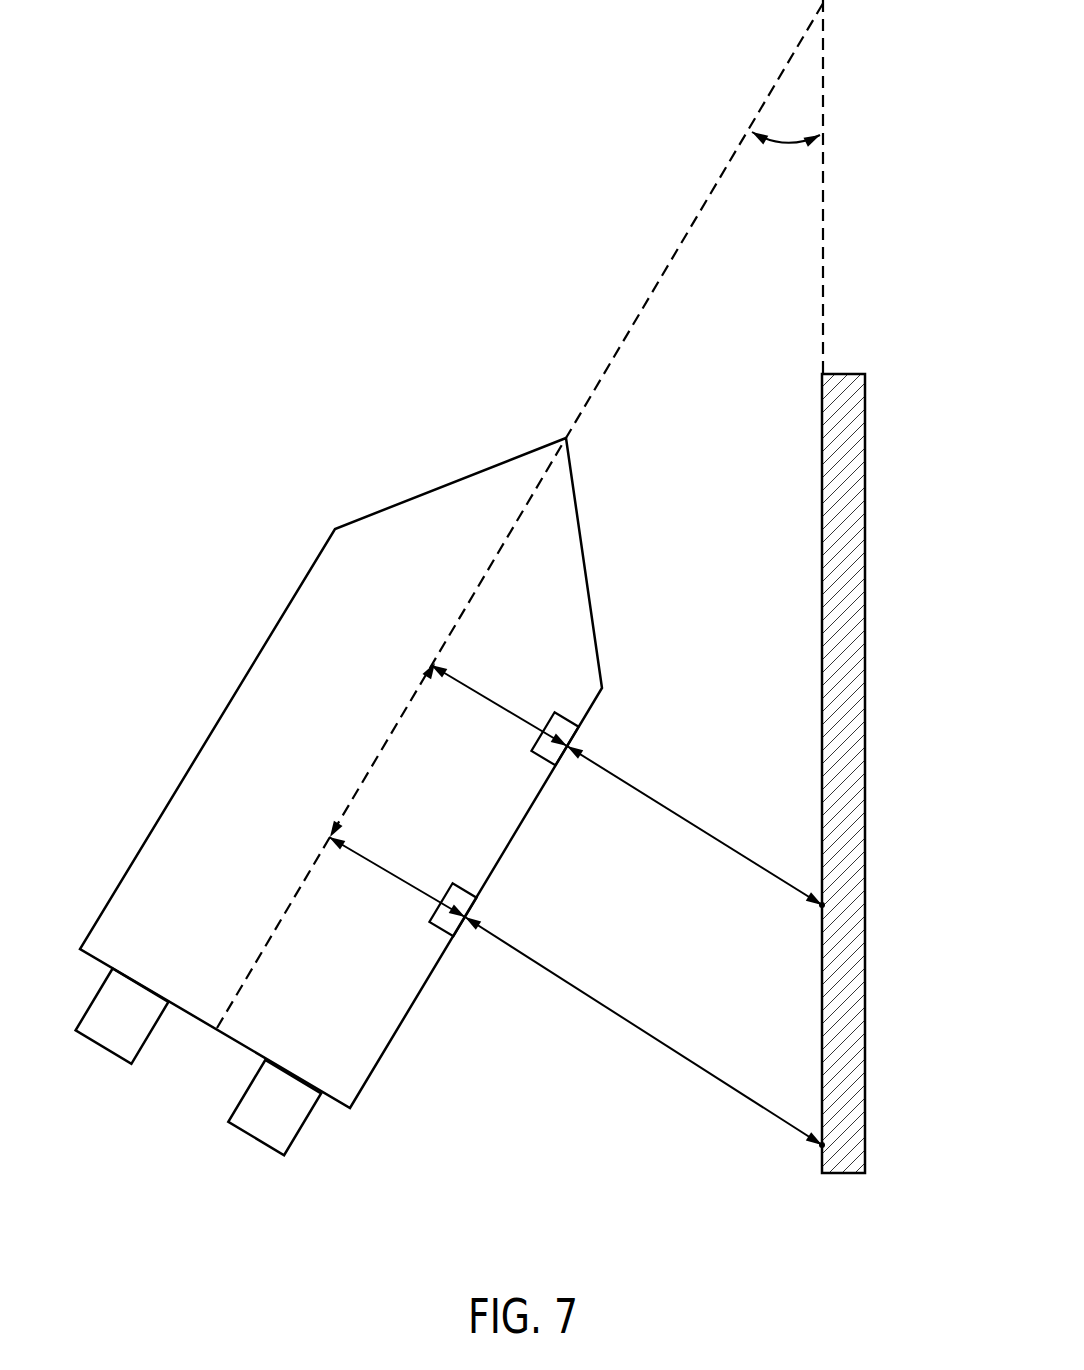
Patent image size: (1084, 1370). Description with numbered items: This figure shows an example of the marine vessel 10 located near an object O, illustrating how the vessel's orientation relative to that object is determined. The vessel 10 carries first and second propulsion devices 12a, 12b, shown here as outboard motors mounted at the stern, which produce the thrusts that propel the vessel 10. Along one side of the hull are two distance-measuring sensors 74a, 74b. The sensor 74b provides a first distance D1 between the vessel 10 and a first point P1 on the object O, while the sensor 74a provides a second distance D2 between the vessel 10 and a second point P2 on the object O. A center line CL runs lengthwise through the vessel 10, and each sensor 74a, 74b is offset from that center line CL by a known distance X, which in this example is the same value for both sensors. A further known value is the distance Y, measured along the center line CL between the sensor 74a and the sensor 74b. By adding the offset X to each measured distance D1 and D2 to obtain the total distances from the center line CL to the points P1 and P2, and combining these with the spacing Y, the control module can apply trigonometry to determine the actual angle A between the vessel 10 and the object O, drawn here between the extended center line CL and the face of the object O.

The marine vessel 10 is at (292, 593).
The first propulsion device 12a is at (112, 1055).
The second propulsion device 12b is at (255, 1142).
The distance-measuring sensor 74a is at (452, 937).
The distance-measuring sensor 74b is at (579, 724).
The object O is at (865, 822).
The first point P1 is at (818, 906).
The second point P2 is at (818, 1146).
The first distance D1 is at (694, 825).
The second distance D2 is at (643, 1031).
The distance between centerline and sensor X is at (448, 791).
The distance between sensors Y is at (402, 715).
The angle A is at (783, 143).
The center line CL is at (280, 928).